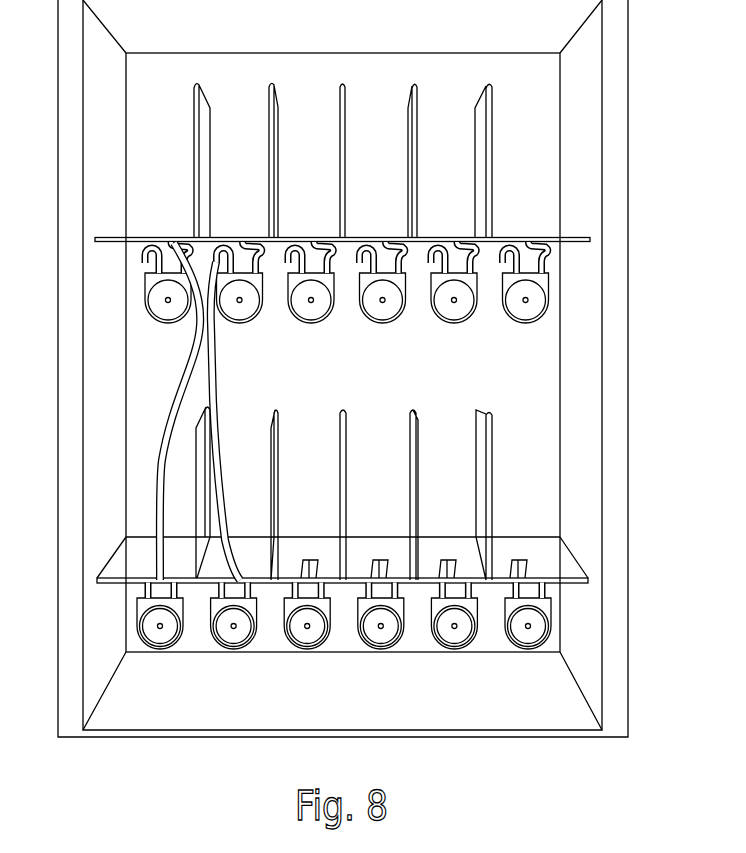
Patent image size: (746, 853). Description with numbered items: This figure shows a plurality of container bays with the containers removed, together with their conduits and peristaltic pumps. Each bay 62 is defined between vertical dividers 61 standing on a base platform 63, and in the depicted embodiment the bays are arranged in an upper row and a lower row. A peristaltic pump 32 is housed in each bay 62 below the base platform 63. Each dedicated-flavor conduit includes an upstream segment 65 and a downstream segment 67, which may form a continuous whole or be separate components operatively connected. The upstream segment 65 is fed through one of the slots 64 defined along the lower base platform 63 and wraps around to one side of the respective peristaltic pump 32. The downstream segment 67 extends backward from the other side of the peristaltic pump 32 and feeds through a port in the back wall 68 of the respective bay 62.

The peristaltic pump 32 is at (239, 300).
The vertical divider 61 is at (490, 198).
The bay 62 is at (455, 172).
The base platform 63 is at (568, 240).
The slot 64 is at (173, 562).
The upstream segment 65 is at (218, 442).
The downstream segment 67 is at (512, 268).
The back wall 68 is at (361, 374).